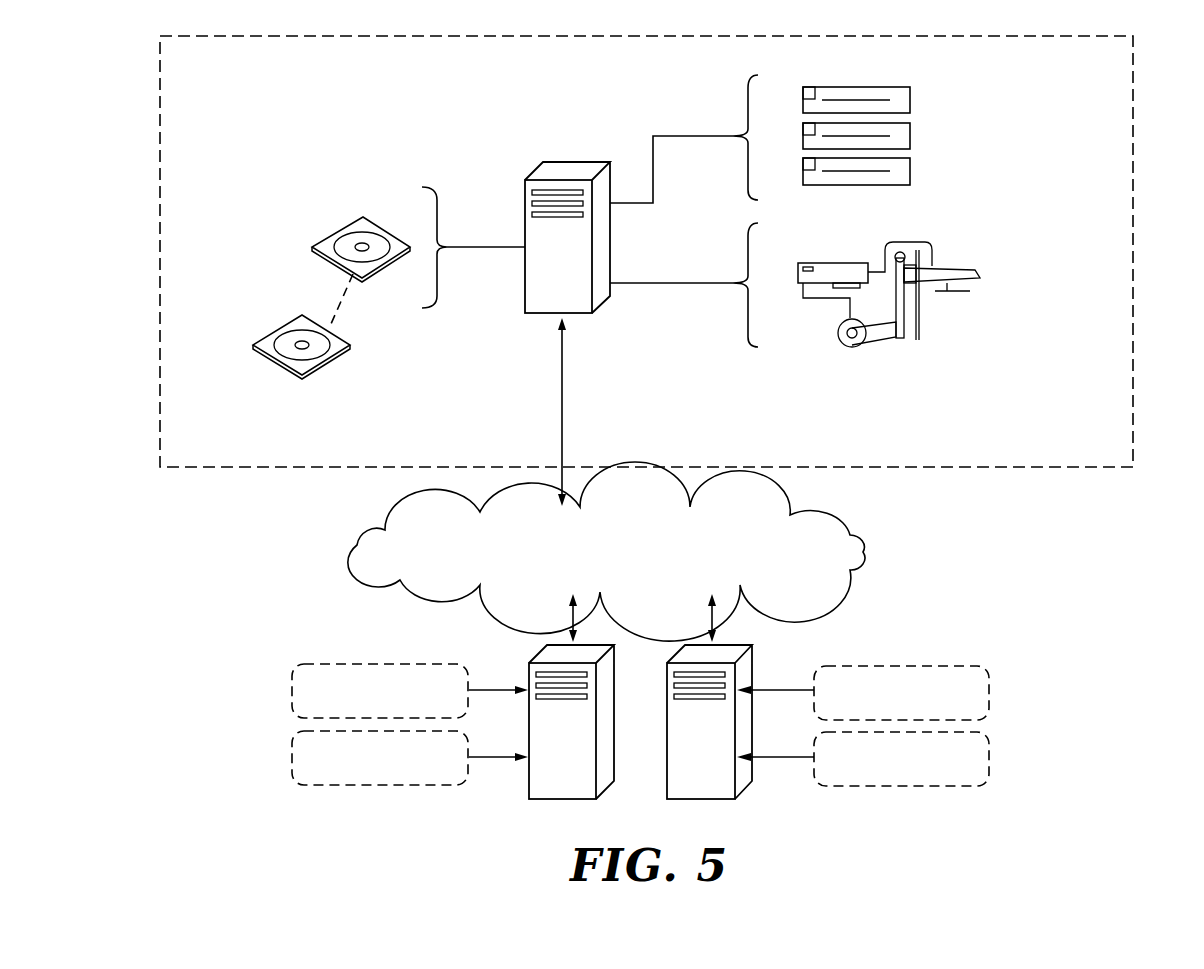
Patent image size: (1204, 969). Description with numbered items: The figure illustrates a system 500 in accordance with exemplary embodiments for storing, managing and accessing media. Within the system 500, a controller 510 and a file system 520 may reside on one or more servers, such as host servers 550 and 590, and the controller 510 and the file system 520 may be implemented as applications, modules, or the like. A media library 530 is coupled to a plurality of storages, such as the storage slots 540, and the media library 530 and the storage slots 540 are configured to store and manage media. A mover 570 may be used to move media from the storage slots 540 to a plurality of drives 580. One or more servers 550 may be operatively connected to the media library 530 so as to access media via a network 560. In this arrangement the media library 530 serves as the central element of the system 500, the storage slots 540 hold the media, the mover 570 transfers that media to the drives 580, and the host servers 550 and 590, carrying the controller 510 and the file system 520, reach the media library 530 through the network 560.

The system 500 is at (1090, 624).
The controller 510 is at (292, 690).
The file system 520 is at (292, 757).
The media library 530 is at (579, 302).
The storage slots 540 is at (333, 212).
The host server 550 is at (585, 781).
The network 560 is at (615, 562).
The mover 570 is at (942, 226).
The drives 580 is at (942, 133).
The host server 590 is at (722, 781).